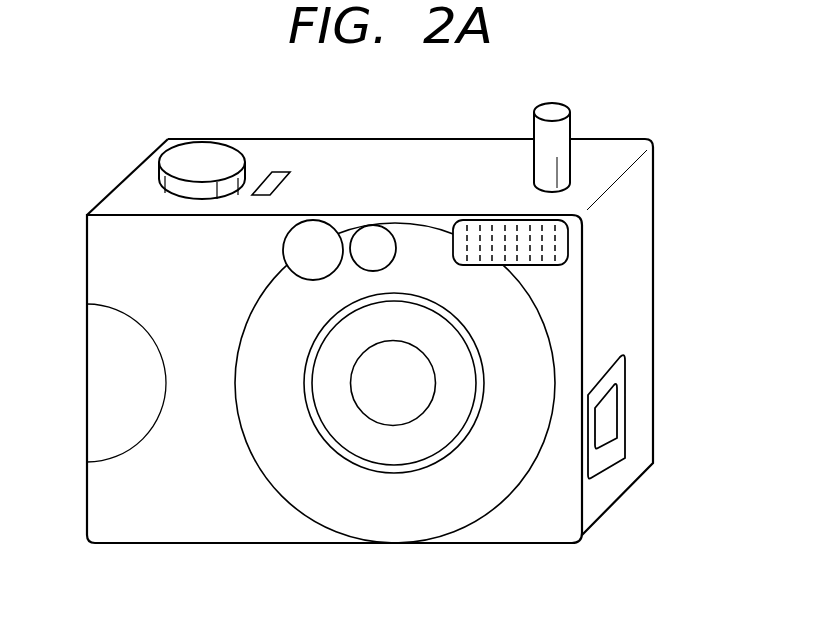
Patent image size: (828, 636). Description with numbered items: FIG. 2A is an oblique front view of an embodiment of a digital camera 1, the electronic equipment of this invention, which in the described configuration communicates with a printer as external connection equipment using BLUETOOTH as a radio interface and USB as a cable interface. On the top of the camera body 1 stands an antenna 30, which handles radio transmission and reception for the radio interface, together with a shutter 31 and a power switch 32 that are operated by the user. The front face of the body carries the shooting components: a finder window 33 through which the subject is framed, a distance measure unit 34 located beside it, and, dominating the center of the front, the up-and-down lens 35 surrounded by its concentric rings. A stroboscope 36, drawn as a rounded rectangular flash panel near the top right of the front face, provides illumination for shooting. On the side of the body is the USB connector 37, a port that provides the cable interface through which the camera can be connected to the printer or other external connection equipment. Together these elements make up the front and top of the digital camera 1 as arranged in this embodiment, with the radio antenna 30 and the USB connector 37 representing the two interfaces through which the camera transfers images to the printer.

The digital camera 1 is at (362, 154).
The antenna 30 is at (560, 132).
The shutter 31 is at (207, 153).
The power switch 32 is at (280, 171).
The finder window 33 is at (293, 250).
The distance measure unit 34 is at (383, 258).
The up-and-down lens 35 is at (383, 450).
The stroboscope 36 is at (563, 245).
The USB connector 37 is at (610, 420).